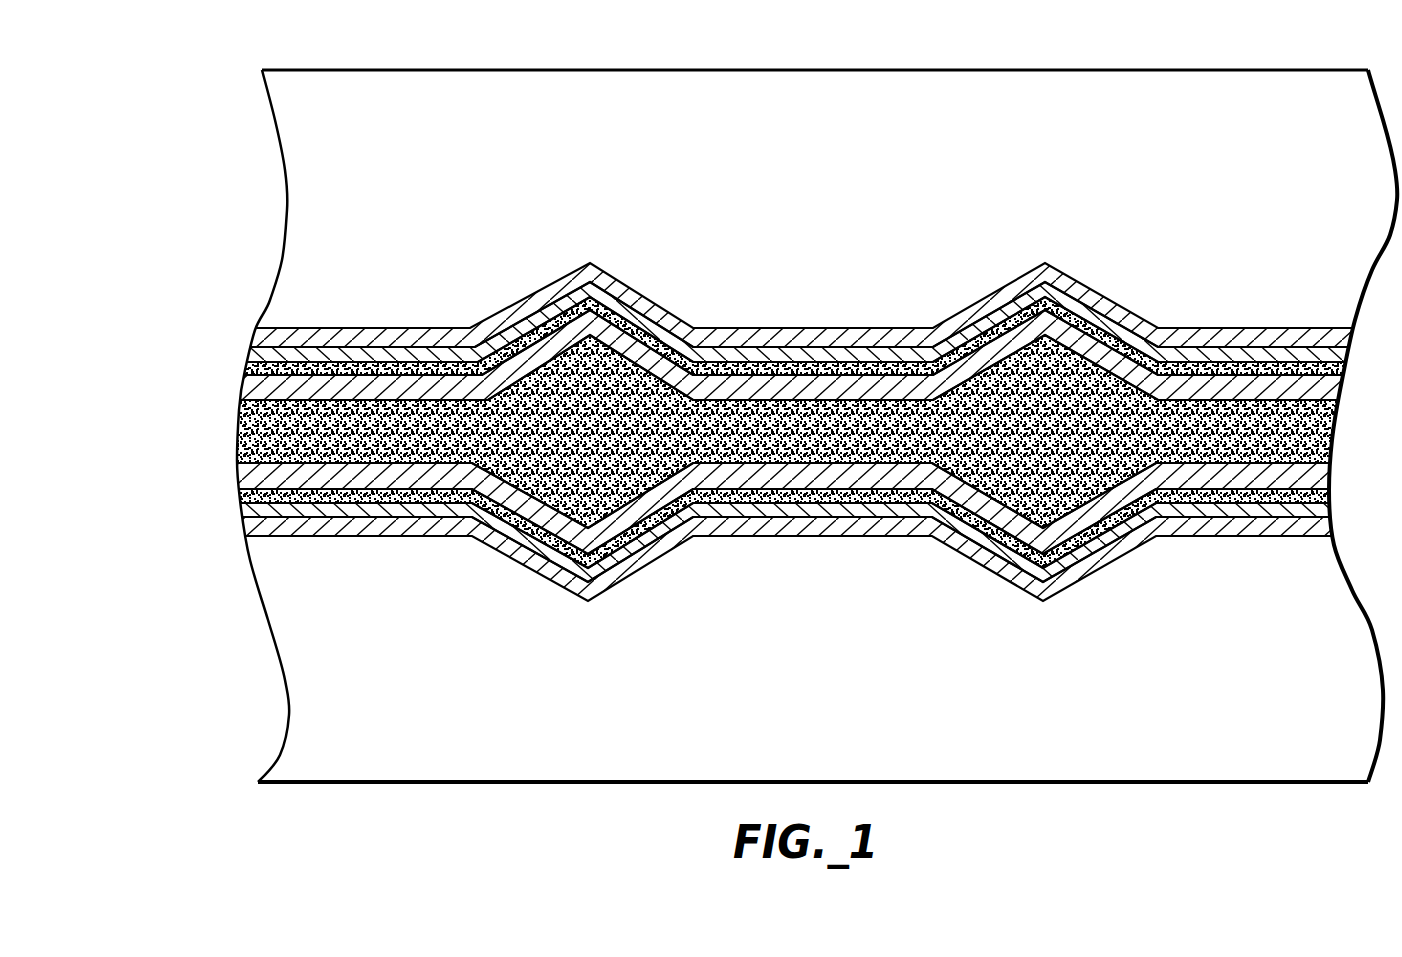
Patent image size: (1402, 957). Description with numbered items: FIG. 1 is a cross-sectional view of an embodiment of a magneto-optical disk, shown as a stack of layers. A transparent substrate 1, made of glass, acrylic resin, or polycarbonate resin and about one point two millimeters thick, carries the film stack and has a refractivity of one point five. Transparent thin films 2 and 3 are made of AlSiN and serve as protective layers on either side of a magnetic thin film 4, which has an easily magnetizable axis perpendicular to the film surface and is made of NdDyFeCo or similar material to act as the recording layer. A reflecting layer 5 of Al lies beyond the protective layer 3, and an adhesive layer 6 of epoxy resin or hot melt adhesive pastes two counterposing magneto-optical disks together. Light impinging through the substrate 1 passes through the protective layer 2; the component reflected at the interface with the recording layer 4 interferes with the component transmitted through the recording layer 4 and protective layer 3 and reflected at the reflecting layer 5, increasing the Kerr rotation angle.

The transparent substrate 1 is at (305, 262).
The transparent thin film 2 is at (265, 339).
The transparent thin film 3 is at (242, 370).
The magnetic thin film 4 is at (257, 358).
The reflecting layer 5 is at (245, 383).
The adhesive layer 6 is at (237, 437).